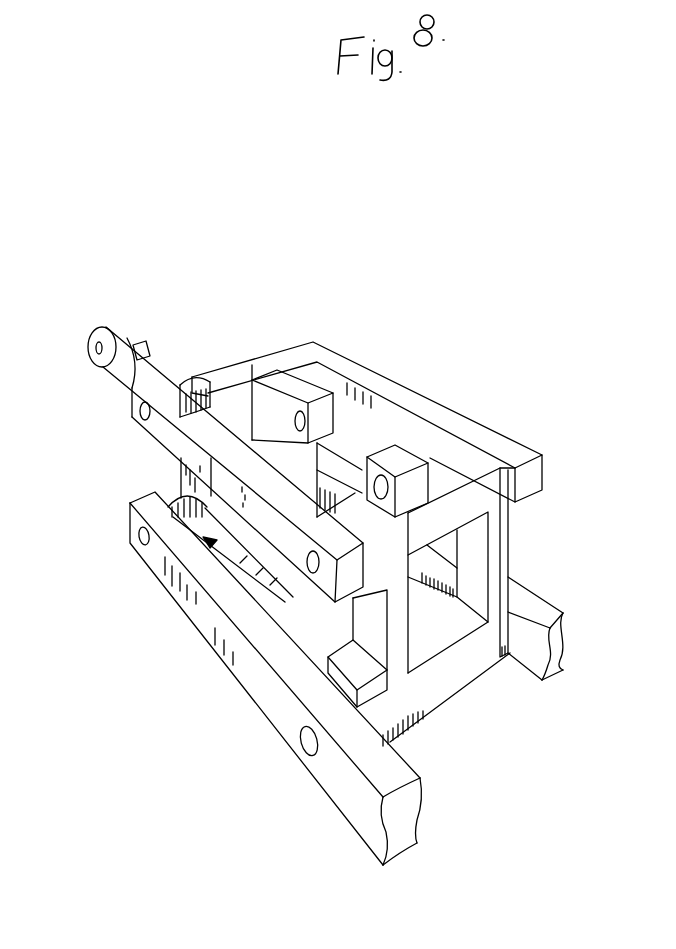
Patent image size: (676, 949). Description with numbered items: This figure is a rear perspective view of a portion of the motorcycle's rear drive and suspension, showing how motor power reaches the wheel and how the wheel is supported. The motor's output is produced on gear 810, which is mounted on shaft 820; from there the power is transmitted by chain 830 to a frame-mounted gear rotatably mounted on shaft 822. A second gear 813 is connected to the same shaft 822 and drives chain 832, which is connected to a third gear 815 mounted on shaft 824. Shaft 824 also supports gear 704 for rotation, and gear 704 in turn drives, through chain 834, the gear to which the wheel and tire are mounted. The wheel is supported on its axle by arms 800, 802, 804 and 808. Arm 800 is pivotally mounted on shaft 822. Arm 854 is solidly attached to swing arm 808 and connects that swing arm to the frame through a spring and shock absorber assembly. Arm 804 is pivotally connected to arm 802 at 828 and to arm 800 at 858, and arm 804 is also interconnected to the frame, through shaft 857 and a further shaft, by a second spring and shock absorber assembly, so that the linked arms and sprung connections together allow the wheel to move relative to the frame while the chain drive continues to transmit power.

The arm 800 is at (333, 357).
The arm 802 is at (253, 665).
The arm 804 is at (500, 539).
The swing arm 808 is at (231, 393).
The gear 810 is at (92, 328).
The second gear 813 is at (181, 392).
The third gear 815 is at (180, 492).
The shaft 820 is at (96, 350).
The shaft 822 is at (138, 412).
The shaft 824 is at (140, 540).
The pivot connection 828 is at (306, 740).
The chain 830 is at (138, 352).
The chain 832 is at (180, 475).
The chain 834 is at (270, 580).
The arm 854 is at (310, 400).
The shaft 857 is at (380, 473).
The pivot connection 858 is at (312, 565).
The gear 704 is at (188, 504).